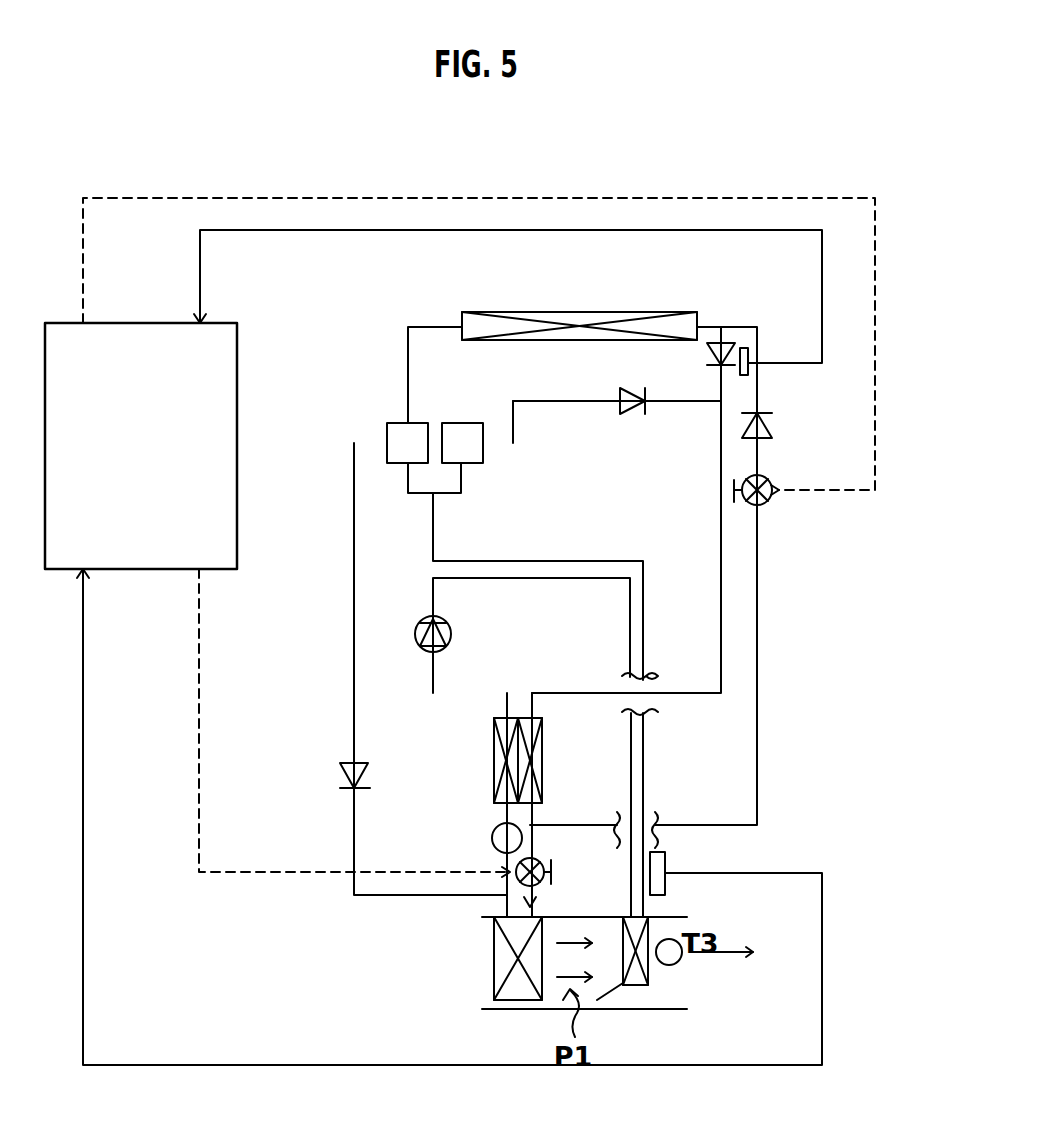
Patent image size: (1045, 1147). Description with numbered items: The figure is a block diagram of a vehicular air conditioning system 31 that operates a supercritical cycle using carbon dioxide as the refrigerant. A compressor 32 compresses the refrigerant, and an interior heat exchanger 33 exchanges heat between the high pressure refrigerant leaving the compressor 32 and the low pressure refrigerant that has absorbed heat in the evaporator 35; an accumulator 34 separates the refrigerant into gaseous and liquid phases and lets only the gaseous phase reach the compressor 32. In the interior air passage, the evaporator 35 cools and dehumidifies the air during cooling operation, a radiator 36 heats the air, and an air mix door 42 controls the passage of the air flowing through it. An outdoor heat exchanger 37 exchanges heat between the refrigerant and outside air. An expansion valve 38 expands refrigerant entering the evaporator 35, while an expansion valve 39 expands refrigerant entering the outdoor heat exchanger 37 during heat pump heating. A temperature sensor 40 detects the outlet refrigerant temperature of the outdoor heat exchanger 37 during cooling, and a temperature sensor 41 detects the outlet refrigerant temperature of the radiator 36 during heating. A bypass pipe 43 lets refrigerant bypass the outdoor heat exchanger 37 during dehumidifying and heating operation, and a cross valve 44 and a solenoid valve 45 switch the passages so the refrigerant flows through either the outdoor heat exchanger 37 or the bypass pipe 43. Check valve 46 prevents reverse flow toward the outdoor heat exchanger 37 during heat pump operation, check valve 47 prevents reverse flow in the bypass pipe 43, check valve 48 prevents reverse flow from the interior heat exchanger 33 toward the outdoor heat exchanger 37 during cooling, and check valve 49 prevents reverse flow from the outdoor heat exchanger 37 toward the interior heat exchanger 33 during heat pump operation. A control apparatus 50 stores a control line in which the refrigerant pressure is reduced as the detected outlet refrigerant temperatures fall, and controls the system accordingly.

The vehicular air conditioning system 31 is at (808, 605).
The compressor 32 is at (451, 634).
The interior heat exchanger 33 is at (542, 755).
The accumulator 34 is at (492, 838).
The evaporator 35 is at (494, 960).
The radiator 36 is at (648, 972).
The outdoor heat exchanger 37 is at (630, 312).
The expansion valve 38 is at (540, 862).
The expansion valve 39 is at (768, 479).
The temperature sensor 40 is at (743, 348).
The temperature sensor 41 is at (665, 858).
The air mix door 42 is at (612, 992).
The bypass pipe 43 is at (560, 401).
The cross valve 44 is at (395, 423).
The solenoid valve 45 is at (466, 423).
The check valve 46 is at (340, 776).
The check valve 47 is at (620, 398).
The check valve 48 is at (706, 350).
The check valve 49 is at (772, 428).
The control apparatus 50 is at (237, 443).